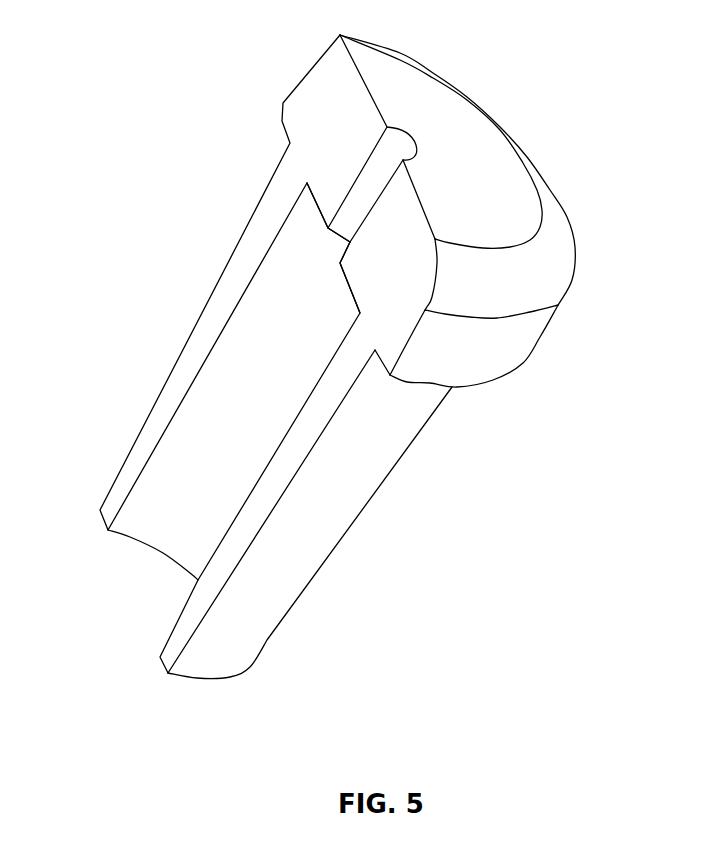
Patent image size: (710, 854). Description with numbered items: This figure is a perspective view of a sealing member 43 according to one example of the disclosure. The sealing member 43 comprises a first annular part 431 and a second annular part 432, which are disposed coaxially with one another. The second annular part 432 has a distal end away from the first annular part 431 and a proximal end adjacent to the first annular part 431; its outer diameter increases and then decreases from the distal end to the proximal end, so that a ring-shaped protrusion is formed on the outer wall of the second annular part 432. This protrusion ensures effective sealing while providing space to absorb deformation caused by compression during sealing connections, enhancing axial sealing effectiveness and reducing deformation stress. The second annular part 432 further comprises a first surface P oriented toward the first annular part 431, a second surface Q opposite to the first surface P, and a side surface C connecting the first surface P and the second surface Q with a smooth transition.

The sealing member 43 is at (671, 258).
The first annular part 431 is at (253, 254).
The second annular part 432 is at (313, 123).
The first surface P is at (316, 207).
The second surface Q is at (455, 152).
The side surface C is at (518, 337).